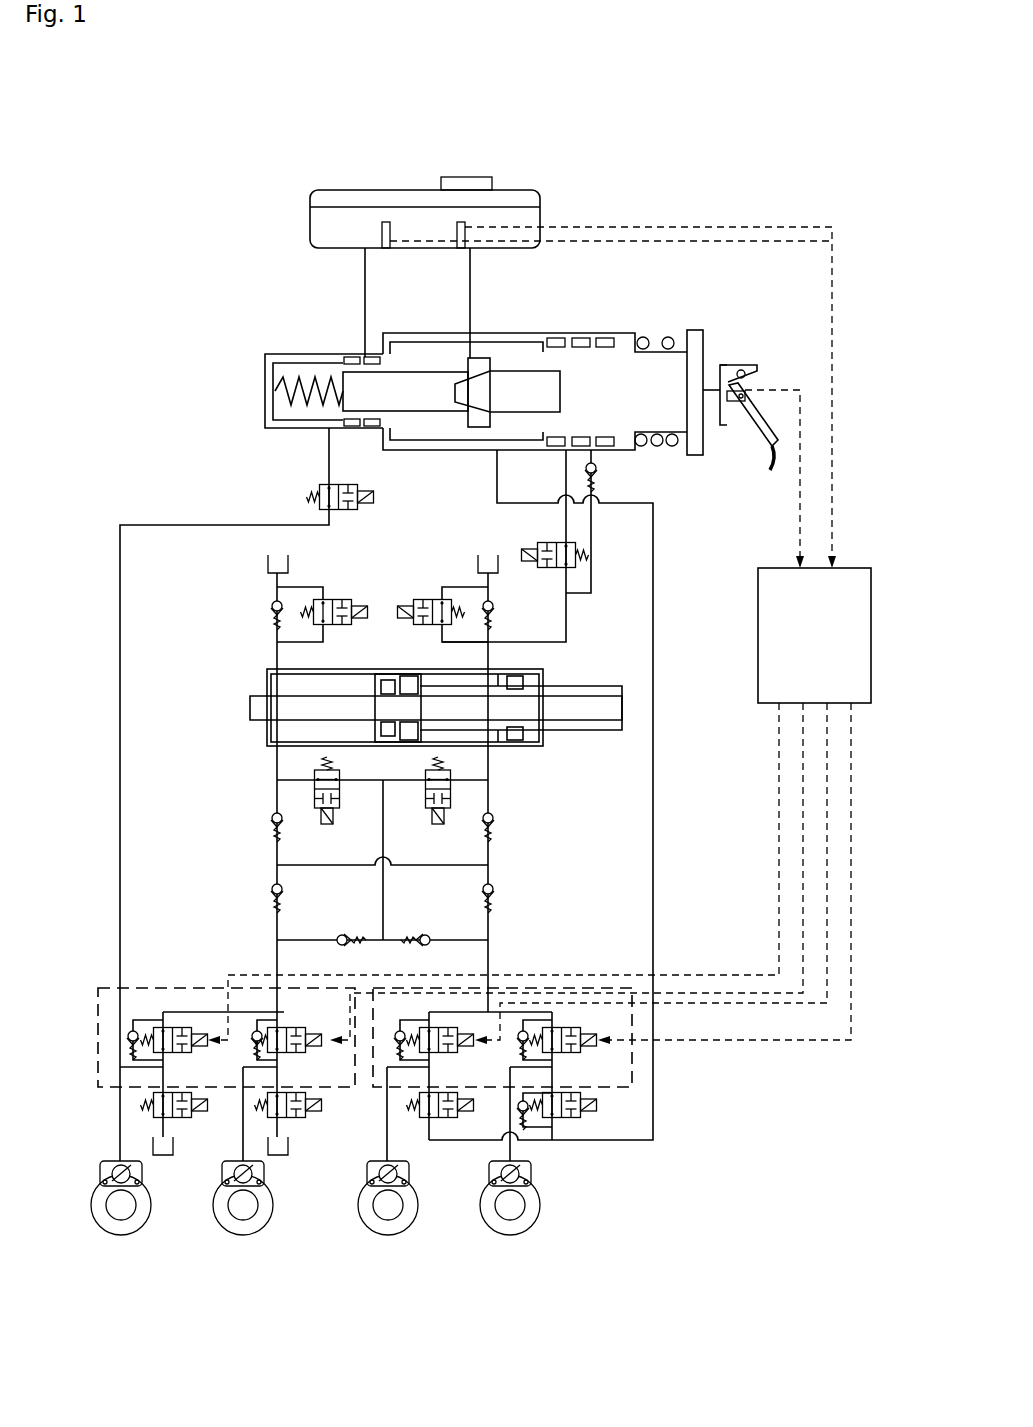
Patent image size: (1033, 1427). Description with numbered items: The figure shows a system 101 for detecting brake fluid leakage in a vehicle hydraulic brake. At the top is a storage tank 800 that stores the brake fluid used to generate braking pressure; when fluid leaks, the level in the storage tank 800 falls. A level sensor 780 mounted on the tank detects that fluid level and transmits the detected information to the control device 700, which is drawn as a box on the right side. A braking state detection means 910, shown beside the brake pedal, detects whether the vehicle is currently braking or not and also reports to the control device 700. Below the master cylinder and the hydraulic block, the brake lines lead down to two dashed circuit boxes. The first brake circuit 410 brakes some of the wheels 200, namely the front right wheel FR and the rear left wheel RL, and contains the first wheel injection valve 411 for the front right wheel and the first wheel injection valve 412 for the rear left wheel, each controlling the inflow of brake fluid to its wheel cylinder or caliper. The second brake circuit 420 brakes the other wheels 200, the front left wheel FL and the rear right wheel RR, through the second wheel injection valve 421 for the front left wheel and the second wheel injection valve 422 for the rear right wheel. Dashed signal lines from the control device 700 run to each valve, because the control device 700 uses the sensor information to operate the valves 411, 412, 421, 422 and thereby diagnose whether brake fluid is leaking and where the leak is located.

The system for detecting brake fluid leakage 101 is at (701, 150).
The storage tank 800 is at (295, 195).
The level sensor 780 is at (461, 208).
The braking state detection means 910 is at (734, 352).
The control device 700 is at (746, 619).
The first brake circuit 410 is at (198, 1043).
The first wheel injection valve 411 is at (172, 1026).
The first wheel injection valve 412 is at (284, 1026).
The second brake circuit 420 is at (532, 1070).
The second wheel injection valve 421 is at (573, 1026).
The second wheel injection valve 422 is at (452, 1026).
The wheels 200 is at (540, 1273).